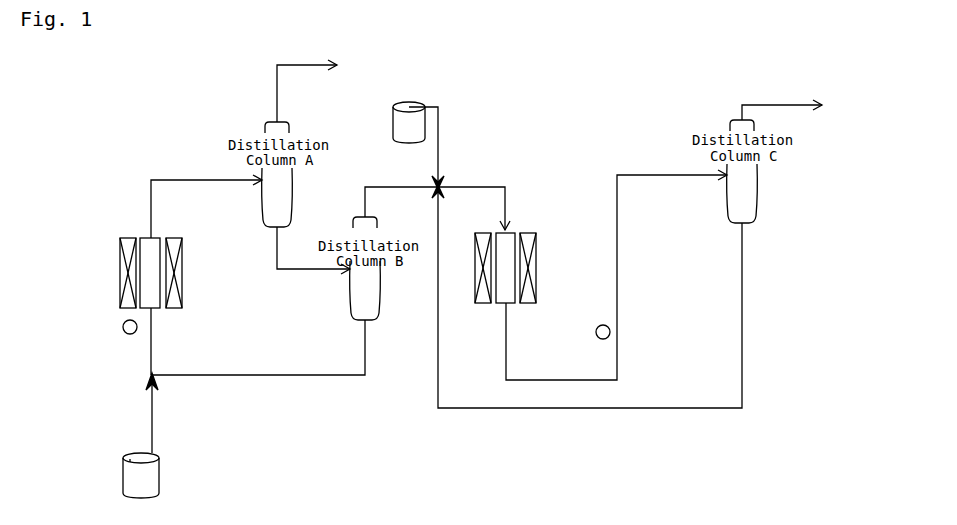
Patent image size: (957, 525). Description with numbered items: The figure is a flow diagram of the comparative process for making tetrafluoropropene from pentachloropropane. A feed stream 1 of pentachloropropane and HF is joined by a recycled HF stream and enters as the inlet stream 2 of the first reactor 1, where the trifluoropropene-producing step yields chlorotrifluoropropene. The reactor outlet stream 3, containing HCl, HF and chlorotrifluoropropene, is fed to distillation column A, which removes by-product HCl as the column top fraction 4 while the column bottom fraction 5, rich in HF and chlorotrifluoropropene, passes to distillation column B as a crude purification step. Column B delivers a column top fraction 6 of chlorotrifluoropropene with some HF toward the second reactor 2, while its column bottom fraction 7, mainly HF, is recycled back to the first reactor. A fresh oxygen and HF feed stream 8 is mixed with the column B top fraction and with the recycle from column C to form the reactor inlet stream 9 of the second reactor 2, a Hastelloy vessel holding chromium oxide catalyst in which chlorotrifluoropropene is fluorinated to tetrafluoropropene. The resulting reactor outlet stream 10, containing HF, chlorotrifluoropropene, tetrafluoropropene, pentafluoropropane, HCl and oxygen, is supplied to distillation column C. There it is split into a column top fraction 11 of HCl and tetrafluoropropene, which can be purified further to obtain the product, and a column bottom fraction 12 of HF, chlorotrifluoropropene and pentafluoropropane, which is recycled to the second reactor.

The reactor 1 is at (140, 368).
The reactor 2 is at (380, 304).
The reactor outlet stream 3 is at (206, 206).
The column top fraction 4 is at (307, 91).
The column bottom fraction 5 is at (313, 276).
The column top fraction 6 is at (401, 211).
The column bottom fraction 7 is at (258, 363).
The oxygen and HF feed stream 8 is at (448, 150).
The reactor inlet stream 9 is at (474, 208).
The reactor outlet stream 10 is at (618, 275).
The column top fraction 11 is at (766, 103).
The column bottom fraction 12 is at (590, 324).